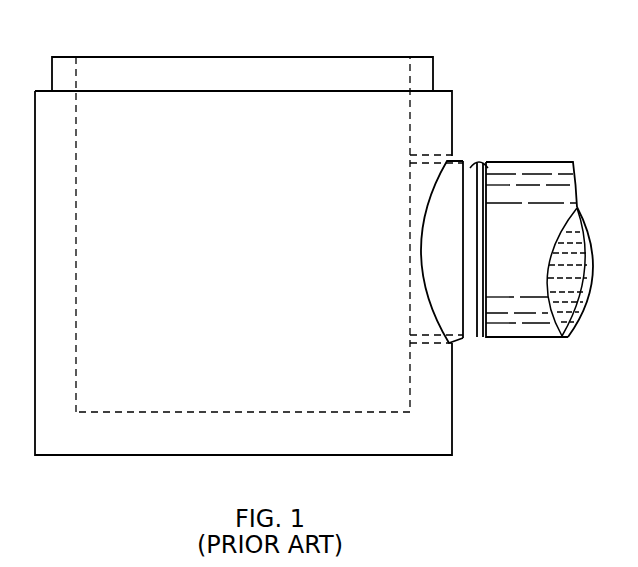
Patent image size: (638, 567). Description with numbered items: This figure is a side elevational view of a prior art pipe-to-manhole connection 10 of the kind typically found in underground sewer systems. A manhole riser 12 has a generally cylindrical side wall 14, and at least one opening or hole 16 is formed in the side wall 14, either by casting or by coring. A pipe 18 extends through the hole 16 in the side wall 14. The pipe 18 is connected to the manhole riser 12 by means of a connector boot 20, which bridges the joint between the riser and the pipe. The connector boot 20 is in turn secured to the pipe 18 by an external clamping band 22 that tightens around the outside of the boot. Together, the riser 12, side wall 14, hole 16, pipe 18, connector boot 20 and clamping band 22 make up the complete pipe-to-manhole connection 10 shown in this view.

The pipe-to-manhole connection 10 is at (507, 223).
The manhole riser 12 is at (184, 57).
The side wall 14 is at (452, 418).
The opening or hole 16 is at (428, 203).
The pipe 18 is at (516, 339).
The connector boot 20 is at (456, 259).
The external clamping band 22 is at (486, 165).